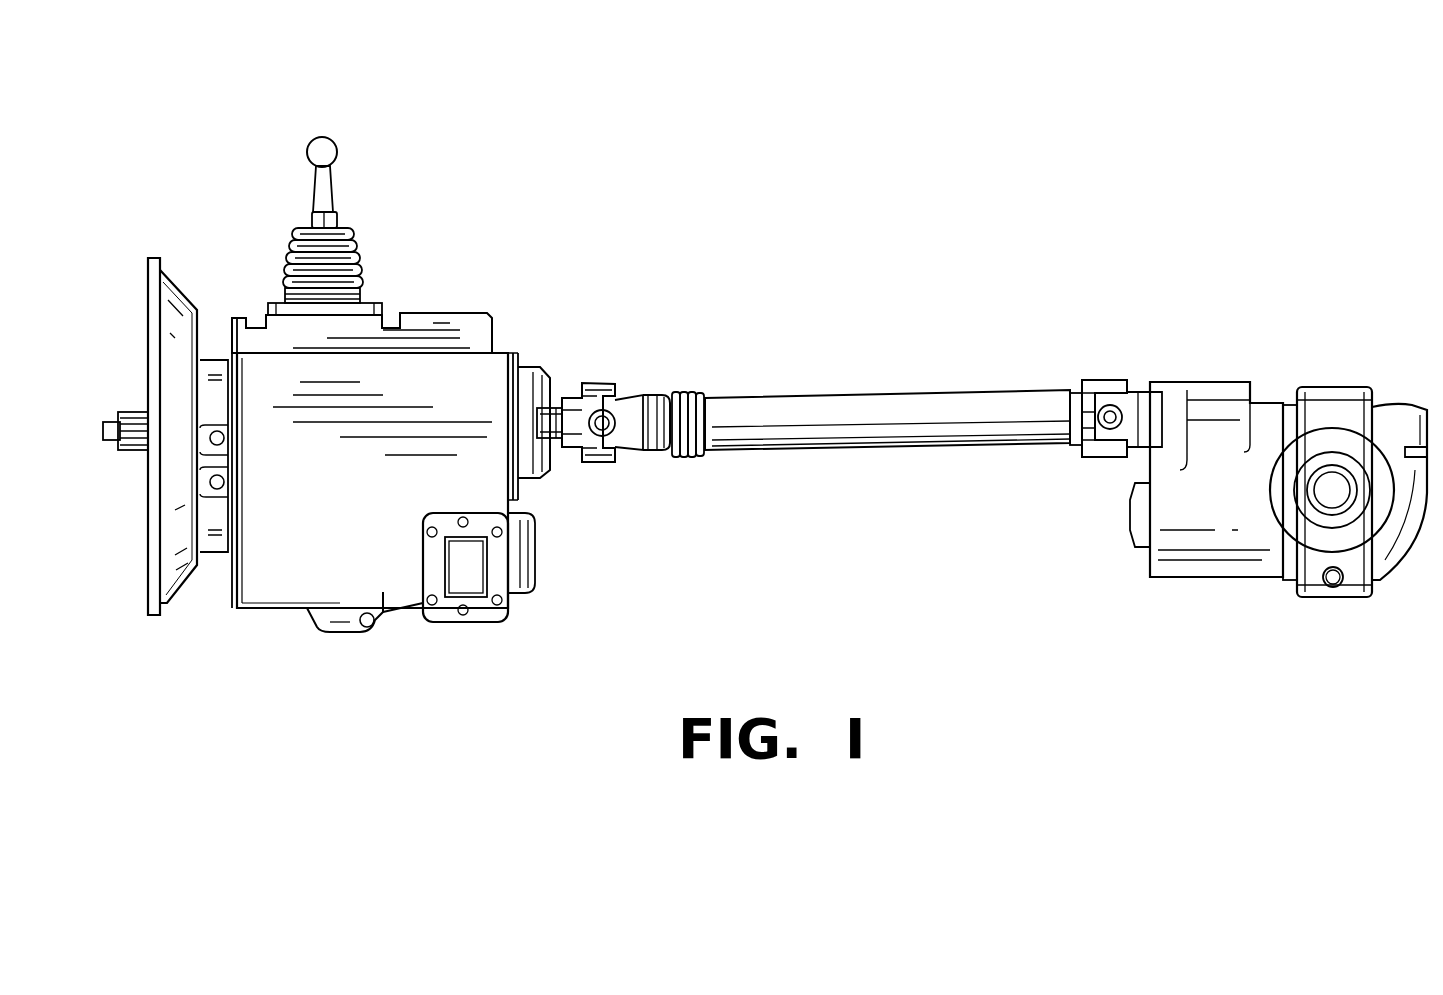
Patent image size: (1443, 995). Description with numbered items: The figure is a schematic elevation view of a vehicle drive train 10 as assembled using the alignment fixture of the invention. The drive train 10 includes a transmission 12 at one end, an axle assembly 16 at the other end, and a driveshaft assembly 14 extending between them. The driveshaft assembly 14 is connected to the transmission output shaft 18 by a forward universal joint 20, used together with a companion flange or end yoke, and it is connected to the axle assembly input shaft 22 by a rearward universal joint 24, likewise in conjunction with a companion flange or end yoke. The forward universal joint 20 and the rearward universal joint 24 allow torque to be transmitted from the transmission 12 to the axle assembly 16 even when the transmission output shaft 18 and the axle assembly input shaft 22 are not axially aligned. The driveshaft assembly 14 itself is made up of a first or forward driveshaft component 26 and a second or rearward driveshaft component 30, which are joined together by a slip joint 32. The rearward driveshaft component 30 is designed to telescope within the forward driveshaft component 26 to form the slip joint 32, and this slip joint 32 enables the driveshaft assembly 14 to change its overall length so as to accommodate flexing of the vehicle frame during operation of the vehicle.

The drive train 10 is at (522, 148).
The transmission 12 is at (268, 610).
The driveshaft assembly 14 is at (895, 439).
The axle assembly 16 is at (1227, 573).
The transmission output shaft 18 is at (530, 423).
The forward universal joint 20 is at (583, 390).
The axle assembly input shaft 22 is at (1152, 390).
The rearward universal joint 24 is at (1103, 385).
The forward driveshaft component 26 is at (640, 398).
The rearward driveshaft component 30 is at (900, 397).
The slip joint 32 is at (663, 450).